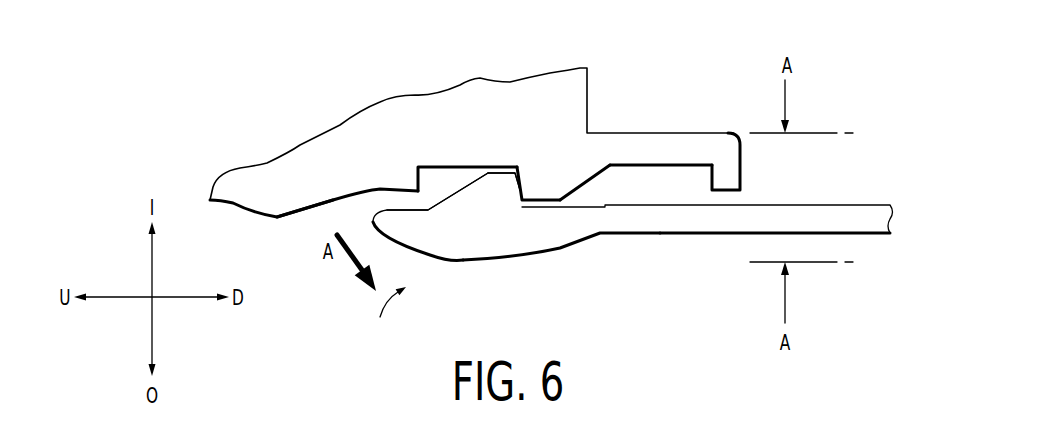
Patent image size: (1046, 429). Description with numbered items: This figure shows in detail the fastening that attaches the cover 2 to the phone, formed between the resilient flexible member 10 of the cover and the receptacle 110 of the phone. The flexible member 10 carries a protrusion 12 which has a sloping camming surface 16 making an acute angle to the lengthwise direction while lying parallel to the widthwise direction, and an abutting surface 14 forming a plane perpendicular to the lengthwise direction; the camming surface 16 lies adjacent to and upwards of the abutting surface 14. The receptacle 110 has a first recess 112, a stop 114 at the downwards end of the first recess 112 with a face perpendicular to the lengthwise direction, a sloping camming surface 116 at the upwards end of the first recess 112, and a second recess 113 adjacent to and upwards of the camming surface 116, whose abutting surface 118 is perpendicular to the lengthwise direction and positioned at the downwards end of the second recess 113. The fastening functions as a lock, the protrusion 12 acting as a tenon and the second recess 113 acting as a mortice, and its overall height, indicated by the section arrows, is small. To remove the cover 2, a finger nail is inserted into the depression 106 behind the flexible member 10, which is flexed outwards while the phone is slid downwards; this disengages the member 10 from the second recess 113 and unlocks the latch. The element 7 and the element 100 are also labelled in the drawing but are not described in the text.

The wiper blade 2 is at (863, 223).
The connecting piece 7 is at (622, 222).
The insertion direction 10 is at (375, 316).
The adapter 12 is at (478, 215).
The adapter upper wall 14 is at (515, 197).
The adapter front portion 16 is at (448, 203).
The wiper arm 100 is at (326, 155).
The lower surface of wiper arm 106 is at (315, 220).
The housing 110 is at (472, 70).
The flat section 112 is at (677, 168).
The step 113 is at (443, 177).
The hook 114 is at (737, 173).
The ramp 116 is at (595, 172).
The step face 118 is at (523, 197).